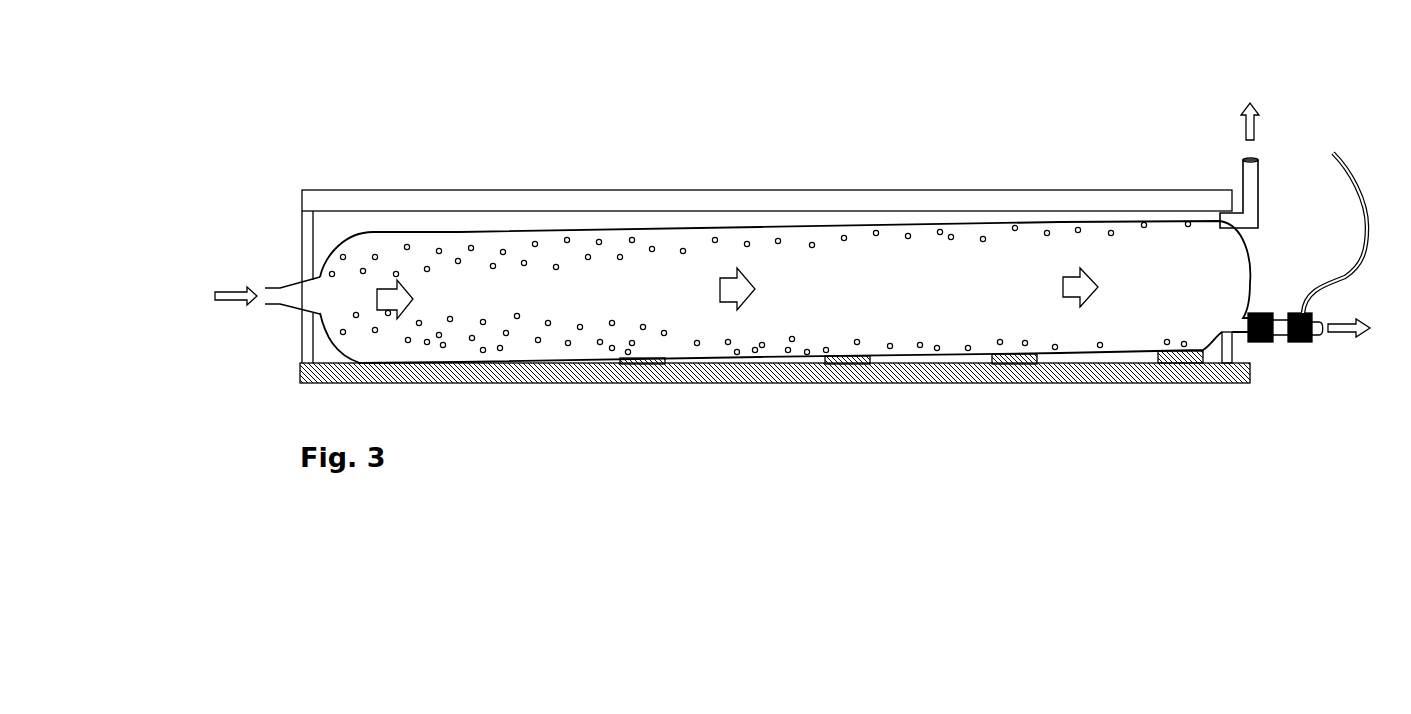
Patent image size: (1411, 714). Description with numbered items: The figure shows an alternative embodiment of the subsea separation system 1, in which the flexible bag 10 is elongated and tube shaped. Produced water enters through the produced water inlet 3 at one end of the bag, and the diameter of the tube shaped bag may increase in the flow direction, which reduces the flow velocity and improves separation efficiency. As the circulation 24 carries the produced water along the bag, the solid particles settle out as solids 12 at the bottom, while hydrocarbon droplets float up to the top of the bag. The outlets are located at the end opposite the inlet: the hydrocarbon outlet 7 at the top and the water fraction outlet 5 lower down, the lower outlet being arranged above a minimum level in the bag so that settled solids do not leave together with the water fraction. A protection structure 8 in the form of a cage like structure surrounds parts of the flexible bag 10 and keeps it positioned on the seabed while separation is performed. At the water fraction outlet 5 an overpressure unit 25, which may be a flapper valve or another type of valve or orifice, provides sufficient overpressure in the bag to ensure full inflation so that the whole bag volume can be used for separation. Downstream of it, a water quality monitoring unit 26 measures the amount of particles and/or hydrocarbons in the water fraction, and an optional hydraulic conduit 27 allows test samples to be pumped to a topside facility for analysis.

The separation system 1 is at (383, 160).
The produced water inlet 3 is at (253, 295).
The water fraction outlet 5 is at (1364, 331).
The hydrocarbon outlet 7 is at (1240, 148).
The protection structure 8 is at (1092, 200).
The flexible bag 10 is at (820, 225).
The solids 12 is at (380, 367).
The circulation 24 is at (717, 277).
The overpressure unit 25 is at (1260, 312).
The water quality monitoring unit 26 is at (1313, 342).
The hydraulic conduit 27 is at (1343, 165).